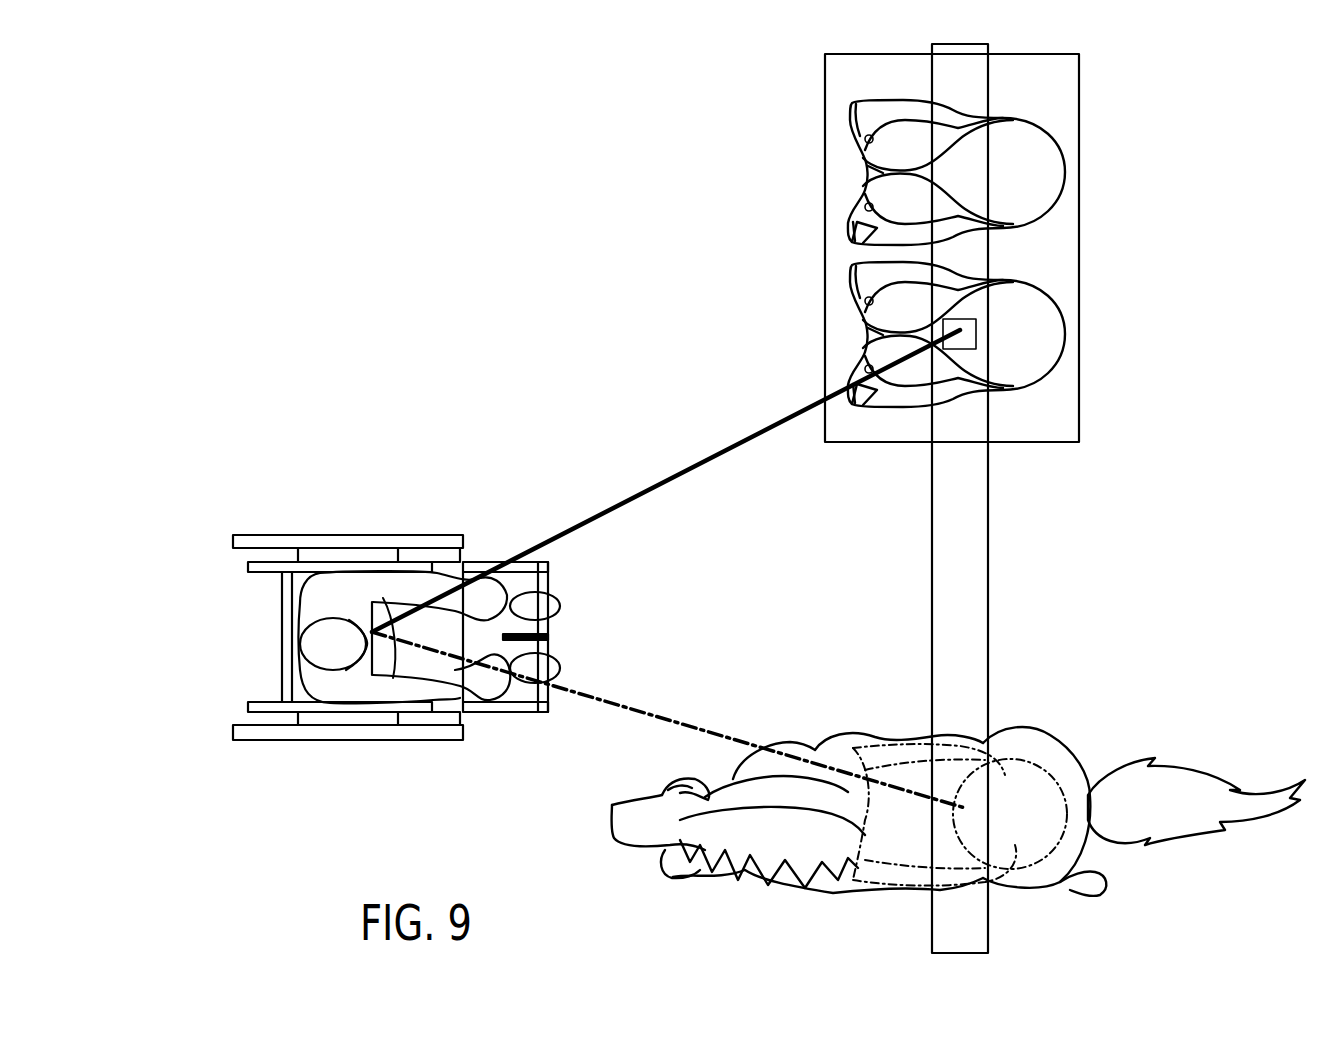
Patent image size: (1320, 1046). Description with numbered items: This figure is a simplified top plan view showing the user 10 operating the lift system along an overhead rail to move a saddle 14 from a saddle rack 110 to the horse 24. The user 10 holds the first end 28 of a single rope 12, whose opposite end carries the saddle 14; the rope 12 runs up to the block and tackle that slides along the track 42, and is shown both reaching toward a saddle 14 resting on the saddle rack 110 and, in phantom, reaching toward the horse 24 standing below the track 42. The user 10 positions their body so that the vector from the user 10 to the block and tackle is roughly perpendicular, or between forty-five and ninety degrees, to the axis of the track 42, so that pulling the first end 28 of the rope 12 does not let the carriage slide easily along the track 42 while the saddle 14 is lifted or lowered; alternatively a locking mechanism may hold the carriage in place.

The user 10 is at (328, 592).
The rope 12 is at (667, 478).
The saddle 14 is at (876, 168).
The horse 24 is at (1047, 742).
The first end 28 is at (395, 565).
The track 42 is at (975, 607).
The saddle rack 110 is at (1058, 93).